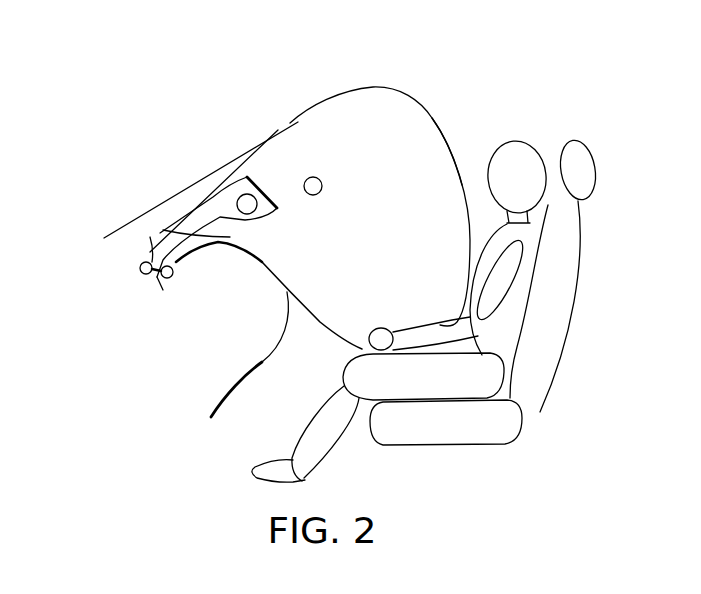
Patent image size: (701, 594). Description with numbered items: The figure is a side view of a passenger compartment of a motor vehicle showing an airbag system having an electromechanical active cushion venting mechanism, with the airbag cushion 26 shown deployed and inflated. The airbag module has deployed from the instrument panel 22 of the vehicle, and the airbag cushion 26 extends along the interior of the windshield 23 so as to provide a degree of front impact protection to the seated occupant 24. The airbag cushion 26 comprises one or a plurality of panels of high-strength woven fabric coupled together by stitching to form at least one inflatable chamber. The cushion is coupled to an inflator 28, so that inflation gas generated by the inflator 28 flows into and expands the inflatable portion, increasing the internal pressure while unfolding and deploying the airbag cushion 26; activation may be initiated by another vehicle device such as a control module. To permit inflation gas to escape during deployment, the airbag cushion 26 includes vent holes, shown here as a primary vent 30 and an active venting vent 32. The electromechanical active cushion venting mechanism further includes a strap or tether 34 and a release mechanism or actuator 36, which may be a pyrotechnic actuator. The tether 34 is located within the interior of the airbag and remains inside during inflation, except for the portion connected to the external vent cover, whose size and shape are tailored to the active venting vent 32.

The instrument panel 22 is at (240, 374).
The windshield 23 is at (432, 79).
The occupant 24 is at (538, 149).
The airbag cushion 26 is at (461, 117).
The inflator 28 is at (167, 290).
The primary vent 30 is at (307, 178).
The active venting vent 32 is at (212, 175).
The tether 34 is at (190, 222).
The actuator 36 is at (140, 268).